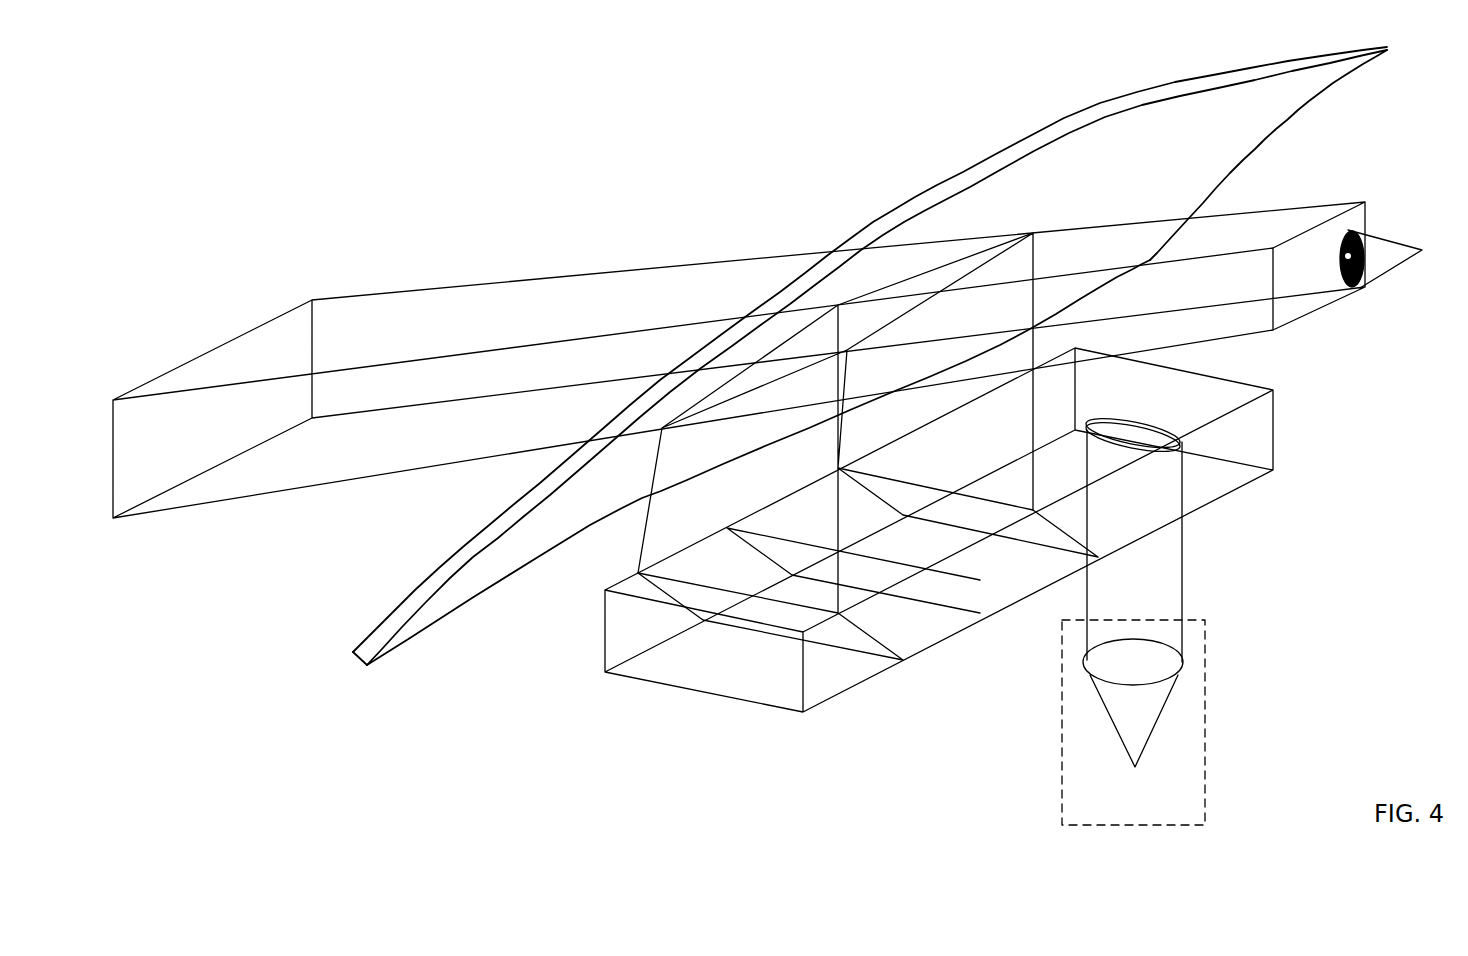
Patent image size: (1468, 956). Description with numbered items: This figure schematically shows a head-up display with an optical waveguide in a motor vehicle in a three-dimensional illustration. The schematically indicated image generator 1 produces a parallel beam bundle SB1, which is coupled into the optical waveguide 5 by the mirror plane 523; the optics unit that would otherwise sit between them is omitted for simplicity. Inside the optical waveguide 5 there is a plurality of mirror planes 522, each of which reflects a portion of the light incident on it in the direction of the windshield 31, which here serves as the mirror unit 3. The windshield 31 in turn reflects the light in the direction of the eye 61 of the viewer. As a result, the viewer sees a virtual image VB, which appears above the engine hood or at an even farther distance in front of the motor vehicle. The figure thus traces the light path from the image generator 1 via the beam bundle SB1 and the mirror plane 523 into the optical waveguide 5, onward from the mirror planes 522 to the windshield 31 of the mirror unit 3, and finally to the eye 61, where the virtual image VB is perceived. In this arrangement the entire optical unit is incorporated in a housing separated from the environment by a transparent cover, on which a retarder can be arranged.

The image generator 1 is at (1208, 656).
The mirror unit 3 is at (870, 356).
The windshield 31 is at (963, 173).
The optical waveguide 5 is at (1274, 434).
The eye 61 is at (1383, 237).
The mirror planes 522 is at (887, 640).
The mirror plane 523 is at (1185, 420).
The parallel beam bundle SB1 is at (1184, 570).
The virtual image VB is at (120, 497).